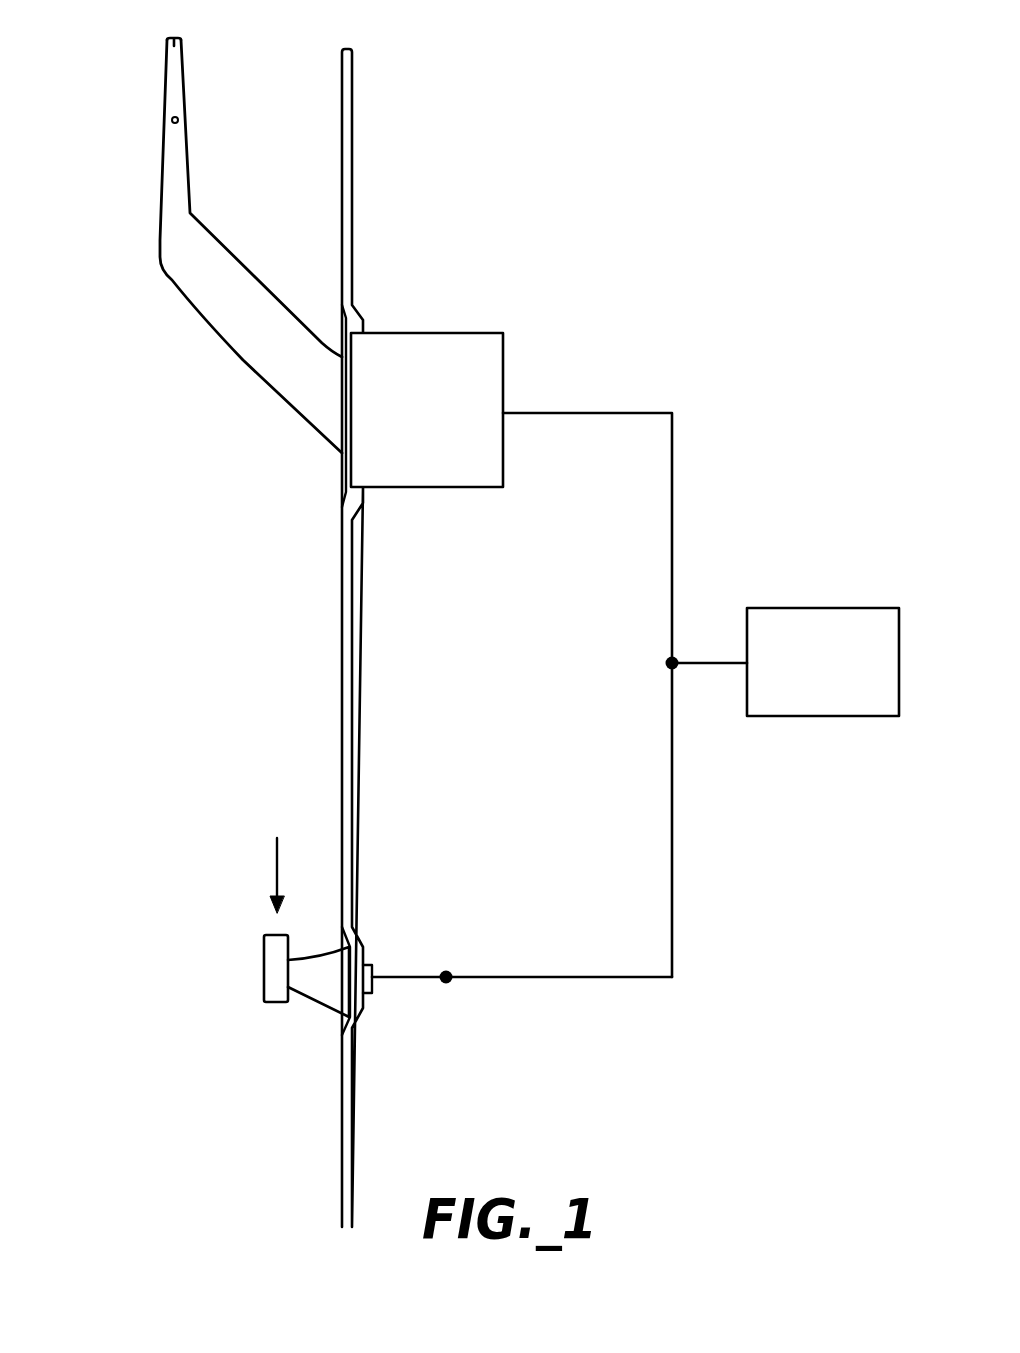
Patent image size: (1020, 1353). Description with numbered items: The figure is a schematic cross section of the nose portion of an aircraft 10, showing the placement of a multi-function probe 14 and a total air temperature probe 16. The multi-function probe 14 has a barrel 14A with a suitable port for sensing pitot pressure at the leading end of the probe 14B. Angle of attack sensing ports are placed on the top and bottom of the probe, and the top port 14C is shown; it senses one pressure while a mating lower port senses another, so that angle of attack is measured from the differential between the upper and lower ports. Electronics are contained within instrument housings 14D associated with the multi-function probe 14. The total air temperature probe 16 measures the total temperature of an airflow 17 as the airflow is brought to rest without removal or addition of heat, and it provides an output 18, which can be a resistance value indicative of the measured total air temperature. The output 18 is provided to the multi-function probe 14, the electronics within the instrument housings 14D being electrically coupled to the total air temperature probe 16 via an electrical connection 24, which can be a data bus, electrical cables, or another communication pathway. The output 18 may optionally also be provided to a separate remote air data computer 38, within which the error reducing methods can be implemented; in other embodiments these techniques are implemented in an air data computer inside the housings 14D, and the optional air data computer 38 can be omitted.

The aircraft 10 is at (342, 683).
The multi-function probe 14 is at (295, 243).
The barrel 14A is at (180, 160).
The leading end of the probe 14B is at (173, 37).
The top angle of attack sensing port 14C is at (184, 120).
The instrument housings 14D is at (405, 352).
The total air temperature probe 16 is at (313, 1000).
The airflow 17 is at (272, 860).
The output 18 is at (398, 977).
The electrical connection 24 is at (672, 902).
The air data computer 38 is at (850, 607).